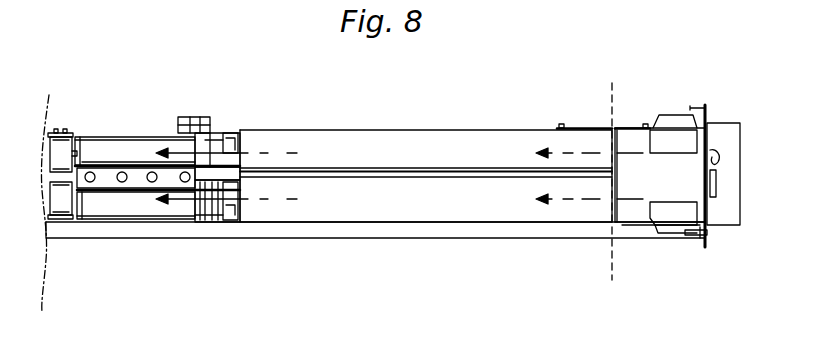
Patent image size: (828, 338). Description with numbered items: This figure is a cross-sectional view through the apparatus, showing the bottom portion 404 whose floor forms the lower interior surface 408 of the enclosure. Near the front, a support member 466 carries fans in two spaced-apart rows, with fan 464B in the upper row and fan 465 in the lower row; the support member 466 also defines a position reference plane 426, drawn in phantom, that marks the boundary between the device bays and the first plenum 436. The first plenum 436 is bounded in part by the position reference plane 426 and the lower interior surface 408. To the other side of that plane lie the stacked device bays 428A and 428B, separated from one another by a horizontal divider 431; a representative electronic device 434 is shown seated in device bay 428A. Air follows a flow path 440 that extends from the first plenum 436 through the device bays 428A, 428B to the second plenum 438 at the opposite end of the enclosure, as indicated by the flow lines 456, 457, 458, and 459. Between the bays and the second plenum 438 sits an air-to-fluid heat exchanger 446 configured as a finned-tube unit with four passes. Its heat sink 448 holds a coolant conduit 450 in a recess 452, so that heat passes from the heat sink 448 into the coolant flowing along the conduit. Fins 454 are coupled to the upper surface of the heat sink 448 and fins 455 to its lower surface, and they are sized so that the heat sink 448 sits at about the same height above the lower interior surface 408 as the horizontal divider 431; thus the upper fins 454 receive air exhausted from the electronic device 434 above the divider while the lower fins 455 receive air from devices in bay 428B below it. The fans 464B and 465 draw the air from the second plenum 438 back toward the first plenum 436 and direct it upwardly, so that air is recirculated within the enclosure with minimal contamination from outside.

The bottom portion 404 is at (622, 230).
The lower interior surface 408 is at (397, 222).
The position reference plane 426 is at (612, 250).
The device bay 428A is at (438, 113).
The device bay 428B is at (332, 205).
The horizontal divider 431 is at (428, 175).
The electronic device 434 is at (473, 148).
The first plenum 436 is at (677, 176).
The second plenum 438 is at (52, 115).
The flow path 440 is at (355, 146).
The air-to-fluid heat exchanger 446 is at (110, 123).
The heat sink 448 is at (103, 175).
The coolant conduit 450 is at (121, 170).
The recess 452 is at (147, 172).
The fins 454 is at (138, 148).
The fins 455 is at (152, 208).
The flow line 456 is at (573, 153).
The flow line 457 is at (573, 203).
The flow line 458 is at (210, 152).
The flow line 459 is at (180, 203).
The fan 464B is at (667, 120).
The fan 465 is at (672, 215).
The support member 466 is at (627, 127).